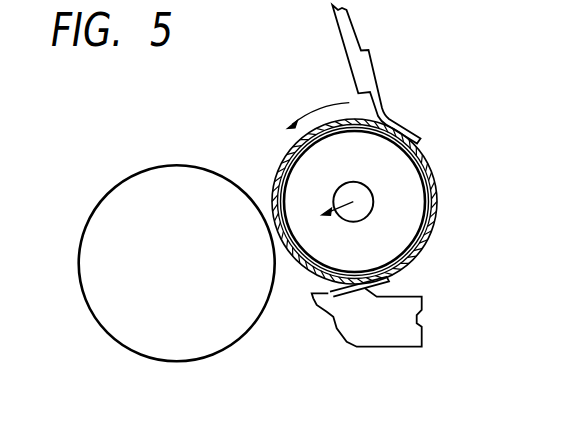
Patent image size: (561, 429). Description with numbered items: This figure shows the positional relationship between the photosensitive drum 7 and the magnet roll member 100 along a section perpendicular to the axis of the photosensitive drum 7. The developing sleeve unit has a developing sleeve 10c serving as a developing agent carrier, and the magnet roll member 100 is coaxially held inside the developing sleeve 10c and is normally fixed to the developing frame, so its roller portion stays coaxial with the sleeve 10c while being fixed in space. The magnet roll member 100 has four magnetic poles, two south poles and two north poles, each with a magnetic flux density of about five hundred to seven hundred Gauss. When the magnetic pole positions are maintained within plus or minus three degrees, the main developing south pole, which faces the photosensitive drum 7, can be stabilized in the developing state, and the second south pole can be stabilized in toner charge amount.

The photosensitive drum 7 is at (235, 325).
The developing sleeve 10c is at (287, 160).
The magnet roll member 100 is at (412, 176).